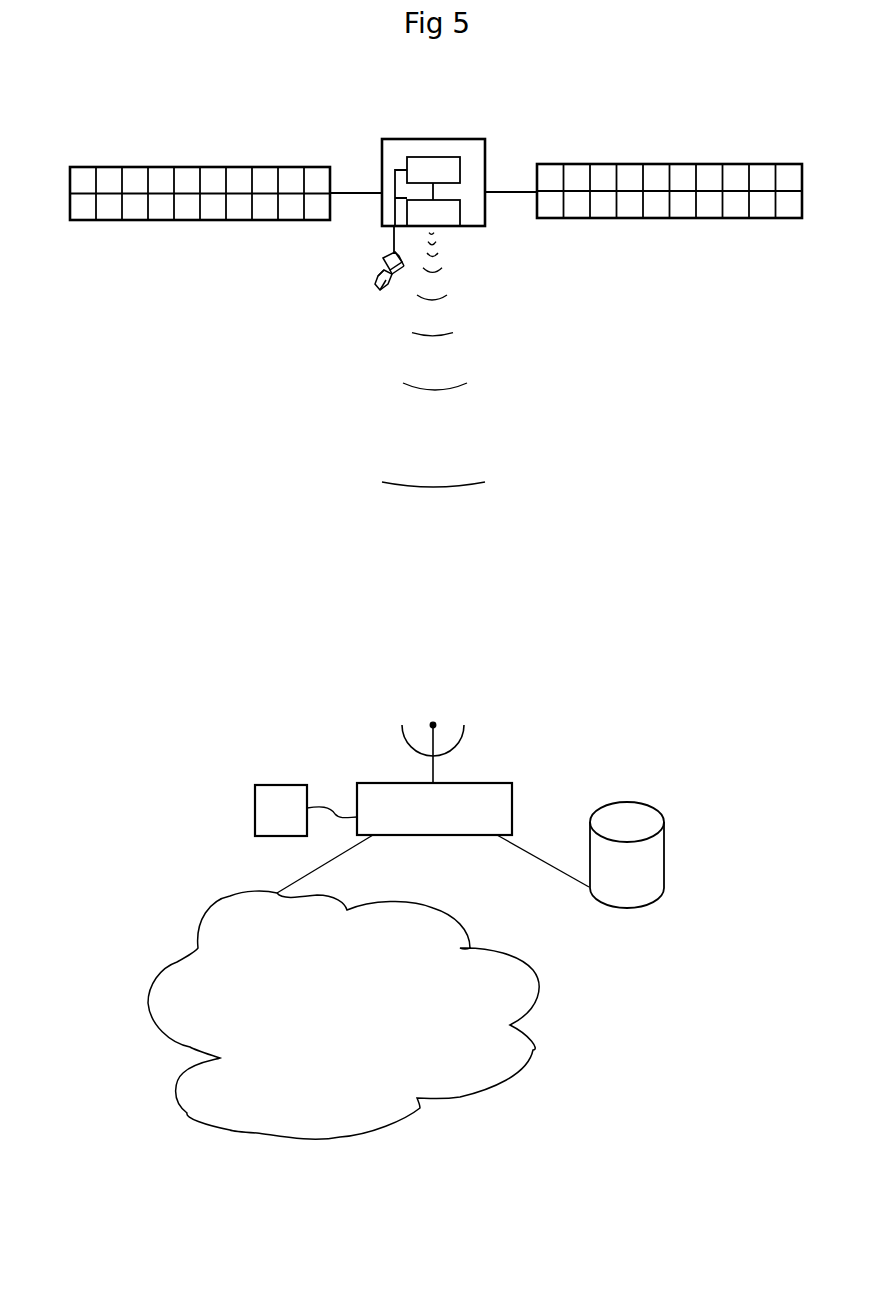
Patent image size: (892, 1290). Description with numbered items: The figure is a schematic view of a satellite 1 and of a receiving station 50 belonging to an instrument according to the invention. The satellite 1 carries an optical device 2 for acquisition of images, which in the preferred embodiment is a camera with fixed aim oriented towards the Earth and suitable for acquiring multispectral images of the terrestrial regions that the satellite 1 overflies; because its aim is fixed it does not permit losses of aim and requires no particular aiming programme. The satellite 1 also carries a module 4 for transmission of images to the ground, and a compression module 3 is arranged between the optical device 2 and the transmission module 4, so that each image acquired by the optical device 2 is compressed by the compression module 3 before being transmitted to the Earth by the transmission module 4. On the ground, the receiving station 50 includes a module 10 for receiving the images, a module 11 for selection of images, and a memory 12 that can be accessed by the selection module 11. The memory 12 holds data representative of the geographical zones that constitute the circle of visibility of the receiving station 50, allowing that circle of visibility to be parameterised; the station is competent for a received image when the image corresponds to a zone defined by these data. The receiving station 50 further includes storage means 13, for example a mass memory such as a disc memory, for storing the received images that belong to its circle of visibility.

The satellite 1 is at (296, 143).
The optical device for acquisition of images 2 is at (383, 258).
The compression module 3 is at (433, 165).
The module for transmission of images 4 is at (450, 220).
The module for receiving images 10 is at (457, 740).
The module for selection of images 11 is at (465, 823).
The memory 12 is at (283, 807).
The storage means 13 is at (647, 873).
The receiving station 50 is at (232, 835).